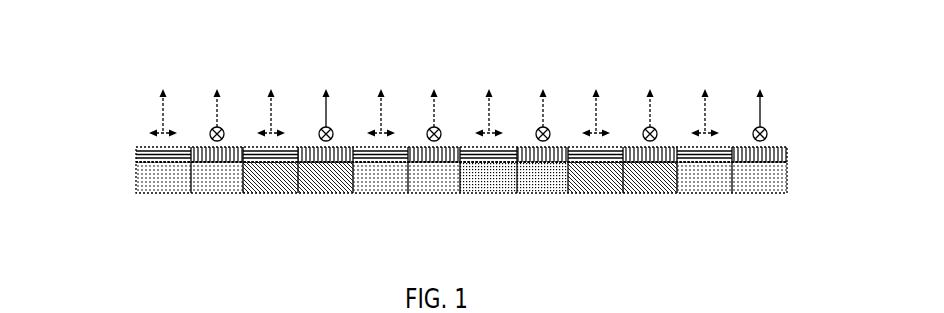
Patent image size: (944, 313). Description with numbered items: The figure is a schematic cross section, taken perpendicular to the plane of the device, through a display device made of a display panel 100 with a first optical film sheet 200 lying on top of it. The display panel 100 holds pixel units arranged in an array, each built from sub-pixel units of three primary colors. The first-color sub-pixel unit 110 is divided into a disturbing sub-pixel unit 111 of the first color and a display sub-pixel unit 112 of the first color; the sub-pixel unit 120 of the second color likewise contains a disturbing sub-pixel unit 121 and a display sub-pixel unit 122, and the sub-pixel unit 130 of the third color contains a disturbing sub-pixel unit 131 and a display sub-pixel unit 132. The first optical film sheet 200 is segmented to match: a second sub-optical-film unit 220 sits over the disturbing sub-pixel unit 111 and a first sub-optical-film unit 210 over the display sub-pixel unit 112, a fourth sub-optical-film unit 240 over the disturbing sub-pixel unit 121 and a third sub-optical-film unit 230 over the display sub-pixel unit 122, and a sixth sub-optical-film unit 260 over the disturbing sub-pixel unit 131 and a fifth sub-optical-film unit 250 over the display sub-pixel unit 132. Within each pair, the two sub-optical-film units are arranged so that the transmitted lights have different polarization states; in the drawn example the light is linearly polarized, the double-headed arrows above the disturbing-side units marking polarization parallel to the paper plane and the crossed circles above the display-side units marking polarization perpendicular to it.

The display panel 100 is at (787, 177).
The first material region of base layer 110 is at (151, 204).
The disturbing sub-pixel unit of the first color 111 is at (167, 186).
The display sub-pixel unit of the first color 112 is at (213, 186).
The sub-pixel unit of the second color 120 is at (274, 204).
The disturbing sub-pixel unit of the second color 121 is at (287, 190).
The display sub-pixel unit of the second color 122 is at (312, 190).
The sub-pixel unit of the third color 130 is at (381, 204).
The disturbing sub-pixel unit of the third color 131 is at (397, 190).
The display sub-pixel unit of the third color 132 is at (423, 190).
The first optical film sheet 200 is at (787, 150).
The first sub-optical-film unit 210 is at (209, 150).
The second sub-optical-film unit 220 is at (148, 150).
The third sub-optical-film unit 230 is at (312, 150).
The fourth sub-optical-film unit 240 is at (260, 150).
The fifth sub-optical-film unit 250 is at (416, 150).
The sixth sub-optical-film unit 260 is at (365, 150).